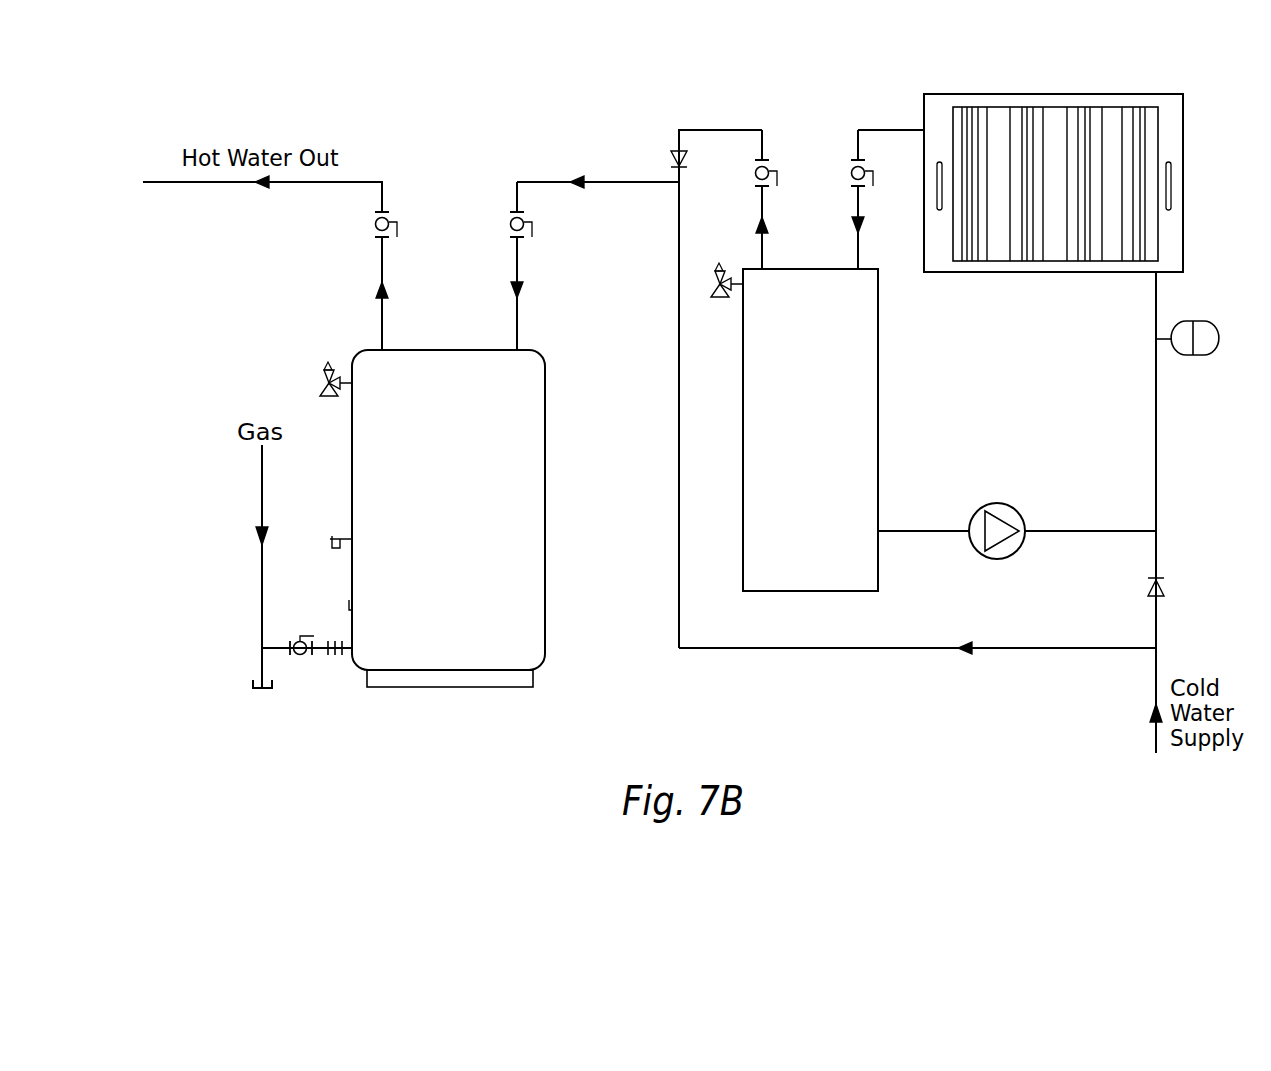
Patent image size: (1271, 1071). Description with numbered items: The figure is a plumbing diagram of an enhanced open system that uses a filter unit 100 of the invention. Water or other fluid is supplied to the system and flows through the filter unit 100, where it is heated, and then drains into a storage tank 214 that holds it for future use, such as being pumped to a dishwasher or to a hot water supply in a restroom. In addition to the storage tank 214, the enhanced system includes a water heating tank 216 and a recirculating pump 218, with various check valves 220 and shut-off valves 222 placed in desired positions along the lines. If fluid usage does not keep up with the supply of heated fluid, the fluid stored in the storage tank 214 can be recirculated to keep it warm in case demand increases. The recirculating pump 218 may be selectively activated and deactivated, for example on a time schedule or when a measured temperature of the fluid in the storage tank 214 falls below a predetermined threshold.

The filter unit 100 is at (1043, 66).
The storage tank 214 is at (878, 446).
The water heating tank 216 is at (545, 526).
The recirculating pump 218 is at (995, 503).
The check valve 220 is at (672, 157).
The shut-off valve 222 is at (508, 228).